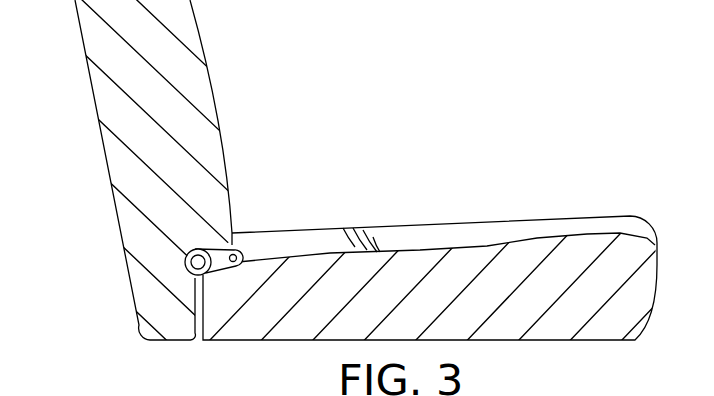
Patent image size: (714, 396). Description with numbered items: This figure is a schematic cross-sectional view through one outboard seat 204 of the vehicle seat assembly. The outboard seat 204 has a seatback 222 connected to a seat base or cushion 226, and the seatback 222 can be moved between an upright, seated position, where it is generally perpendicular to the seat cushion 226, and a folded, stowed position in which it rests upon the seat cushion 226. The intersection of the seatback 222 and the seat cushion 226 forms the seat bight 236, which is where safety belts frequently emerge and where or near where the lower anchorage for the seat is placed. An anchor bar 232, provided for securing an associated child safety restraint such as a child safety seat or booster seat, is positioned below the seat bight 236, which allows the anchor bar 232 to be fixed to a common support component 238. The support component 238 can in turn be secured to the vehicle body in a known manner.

The seatback 222 is at (210, 45).
The outboard seat 204 is at (397, 227).
The seat cushion 226 is at (535, 237).
The seat bight 236 is at (222, 248).
The anchor bar 232 is at (235, 253).
The support component 238 is at (192, 277).